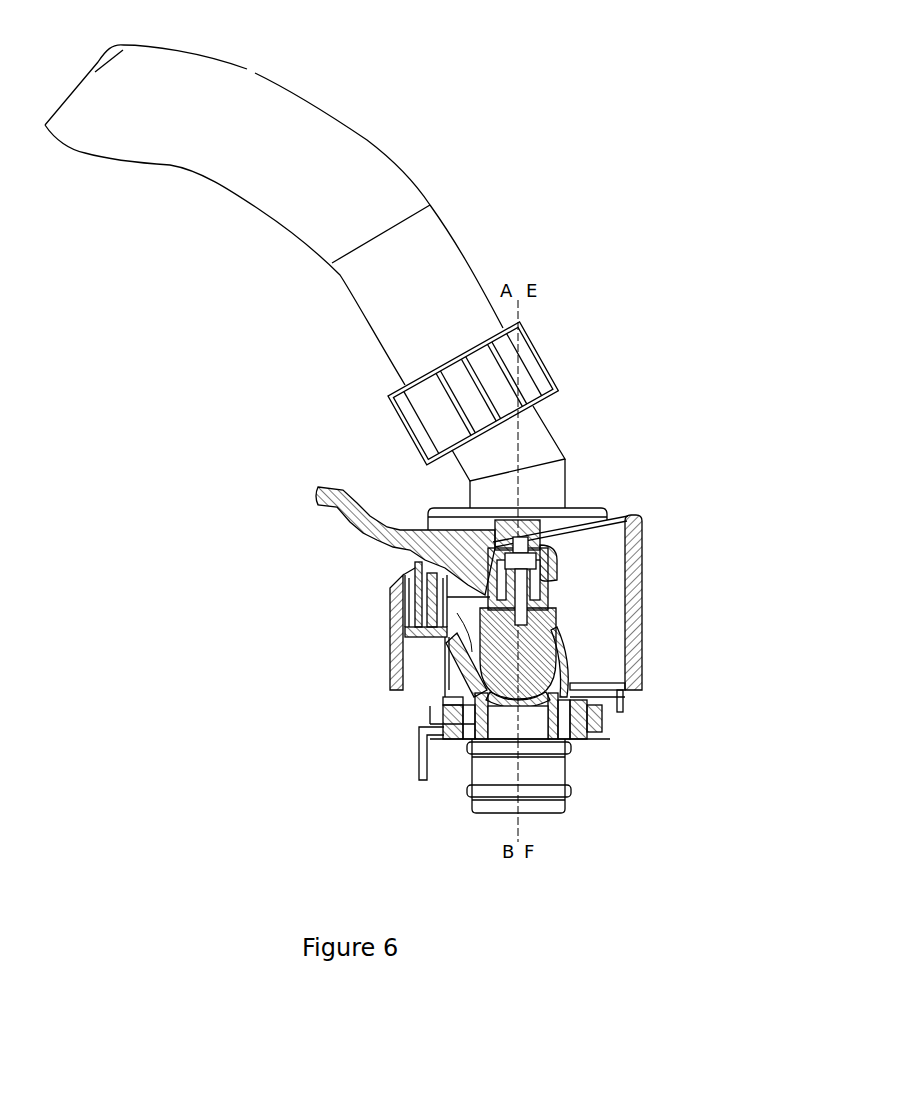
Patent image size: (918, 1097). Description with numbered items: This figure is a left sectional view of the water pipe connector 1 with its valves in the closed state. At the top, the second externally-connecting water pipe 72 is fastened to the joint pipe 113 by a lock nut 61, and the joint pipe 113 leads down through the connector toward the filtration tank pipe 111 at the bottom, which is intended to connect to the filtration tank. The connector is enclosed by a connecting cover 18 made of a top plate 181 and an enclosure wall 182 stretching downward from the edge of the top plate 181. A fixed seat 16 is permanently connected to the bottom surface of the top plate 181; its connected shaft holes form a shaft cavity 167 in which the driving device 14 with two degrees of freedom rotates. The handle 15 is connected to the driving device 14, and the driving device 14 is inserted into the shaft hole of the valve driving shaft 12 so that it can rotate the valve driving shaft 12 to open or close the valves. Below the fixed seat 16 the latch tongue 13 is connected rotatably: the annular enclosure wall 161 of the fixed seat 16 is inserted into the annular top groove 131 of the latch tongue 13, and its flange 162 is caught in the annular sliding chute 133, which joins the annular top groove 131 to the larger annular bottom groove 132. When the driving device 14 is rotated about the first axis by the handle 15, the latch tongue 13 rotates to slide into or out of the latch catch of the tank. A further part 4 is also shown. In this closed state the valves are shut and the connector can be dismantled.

The water pipe connector 1 is at (535, 217).
The second externally-connecting water pipe 72 is at (285, 158).
The lock nut 61 is at (435, 408).
The joint pipe 113 is at (530, 447).
The valve driving shaft 12 is at (572, 640).
The connecting cover 18 is at (628, 512).
The handle 15 is at (417, 538).
The top plate 181 is at (412, 582).
The shaft cavity 167 is at (390, 608).
The enclosure wall 182 is at (392, 638).
The fixed seat 16 is at (450, 666).
The driving device with two degrees of freedom 14 is at (518, 657).
The annular enclosure wall 161 is at (568, 642).
The annular top groove 131 is at (618, 703).
The annular sliding chute 133 is at (602, 720).
The annular bottom groove 132 is at (590, 739).
The filtration tank pipe 111 is at (537, 771).
The bracket 4 is at (420, 745).
The latch tongue 13 is at (453, 745).
The flange 162 is at (430, 713).